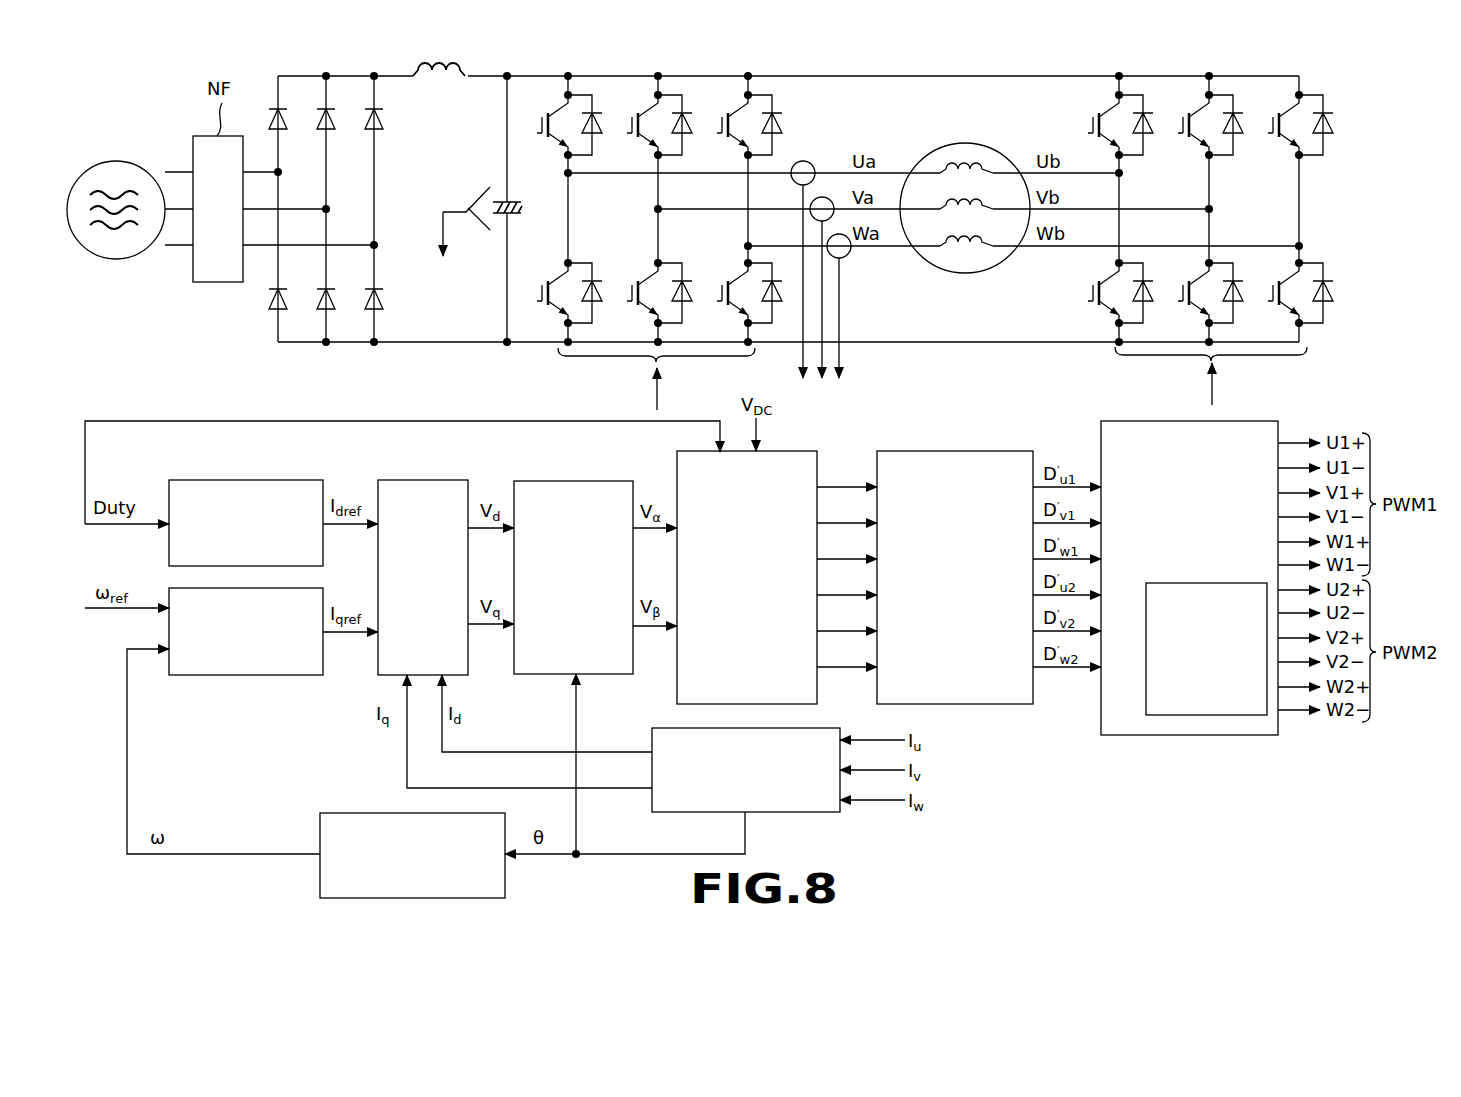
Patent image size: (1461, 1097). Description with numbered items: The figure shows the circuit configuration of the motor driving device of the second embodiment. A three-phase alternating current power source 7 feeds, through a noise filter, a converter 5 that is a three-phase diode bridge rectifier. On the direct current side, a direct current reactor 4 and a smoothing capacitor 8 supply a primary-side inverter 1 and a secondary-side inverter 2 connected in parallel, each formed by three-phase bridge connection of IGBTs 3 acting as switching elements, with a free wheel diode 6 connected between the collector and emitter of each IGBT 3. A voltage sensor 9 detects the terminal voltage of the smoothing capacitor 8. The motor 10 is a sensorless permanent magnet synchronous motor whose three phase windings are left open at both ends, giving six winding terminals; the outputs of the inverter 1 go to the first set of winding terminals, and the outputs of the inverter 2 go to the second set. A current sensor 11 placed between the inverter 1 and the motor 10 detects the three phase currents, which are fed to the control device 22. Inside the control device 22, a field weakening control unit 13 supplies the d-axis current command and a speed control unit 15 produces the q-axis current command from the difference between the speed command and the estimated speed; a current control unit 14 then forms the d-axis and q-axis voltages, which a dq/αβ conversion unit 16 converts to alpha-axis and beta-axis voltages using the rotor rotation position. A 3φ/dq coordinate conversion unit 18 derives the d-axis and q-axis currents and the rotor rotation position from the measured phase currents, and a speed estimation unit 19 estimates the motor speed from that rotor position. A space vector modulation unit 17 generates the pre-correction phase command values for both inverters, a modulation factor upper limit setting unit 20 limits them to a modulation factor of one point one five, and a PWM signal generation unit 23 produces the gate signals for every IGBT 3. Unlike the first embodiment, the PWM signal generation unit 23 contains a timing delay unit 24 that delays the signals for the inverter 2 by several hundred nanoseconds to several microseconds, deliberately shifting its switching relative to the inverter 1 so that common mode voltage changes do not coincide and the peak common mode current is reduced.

The primary-side inverter 1 is at (655, 205).
The secondary-side inverter 2 is at (1030, 44).
The IGBT 3 is at (561, 275).
The direct current reactor 4 is at (442, 67).
The converter 5 is at (370, 63).
The free wheel diode 6 is at (604, 293).
The three-phase alternating current power source 7 is at (118, 158).
The smoothing capacitor 8 is at (497, 184).
The voltage sensor 9 is at (465, 200).
The motor 10 is at (966, 141).
The current sensor 11 is at (853, 261).
The field weakening control unit 13 is at (241, 480).
The current control unit 14 is at (427, 480).
The speed control unit 15 is at (240, 675).
The dq/αβ conversion unit 16 is at (568, 481).
The space vector modulation unit 17 is at (676, 678).
The 3φ/dq coordinate conversion unit 18 is at (810, 728).
The speed estimation unit 19 is at (320, 825).
The modulation factor upper limit setting unit 20 is at (947, 451).
The control device 22 is at (833, 441).
The PWM signal generation unit 23 is at (1152, 735).
The timing delay unit 24 is at (1227, 715).